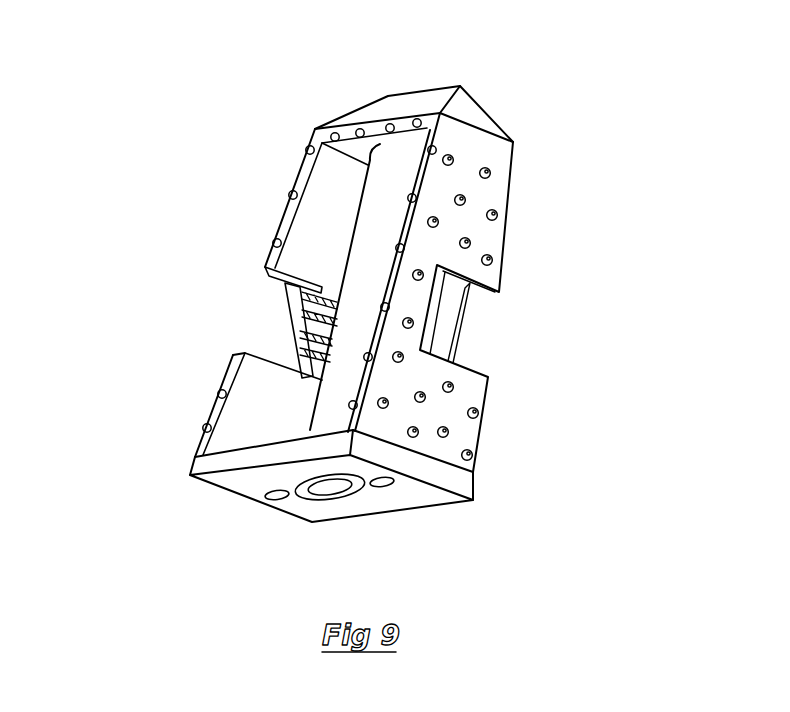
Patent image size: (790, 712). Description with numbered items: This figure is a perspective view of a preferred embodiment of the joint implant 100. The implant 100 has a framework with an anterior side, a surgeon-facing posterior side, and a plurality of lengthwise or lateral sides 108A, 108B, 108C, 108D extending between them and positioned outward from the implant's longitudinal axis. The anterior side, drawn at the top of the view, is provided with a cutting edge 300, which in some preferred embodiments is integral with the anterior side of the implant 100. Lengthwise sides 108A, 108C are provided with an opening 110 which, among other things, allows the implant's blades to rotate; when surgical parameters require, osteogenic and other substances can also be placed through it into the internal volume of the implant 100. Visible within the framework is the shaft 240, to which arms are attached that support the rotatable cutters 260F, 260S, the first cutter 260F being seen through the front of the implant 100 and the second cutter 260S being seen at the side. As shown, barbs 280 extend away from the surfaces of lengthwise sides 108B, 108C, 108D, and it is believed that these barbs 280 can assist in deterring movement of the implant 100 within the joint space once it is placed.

The joint implant 100 is at (285, 100).
The lengthwise side 108A is at (398, 74).
The lengthwise side 108B is at (207, 366).
The lengthwise side 108C is at (308, 537).
The lengthwise side 108D is at (497, 348).
The opening 110 is at (340, 193).
The shaft 240 is at (383, 222).
The cutter 260F is at (278, 321).
The cutter 260S is at (462, 328).
The barbs 280 is at (471, 243).
The cutting edge 300 is at (424, 97).